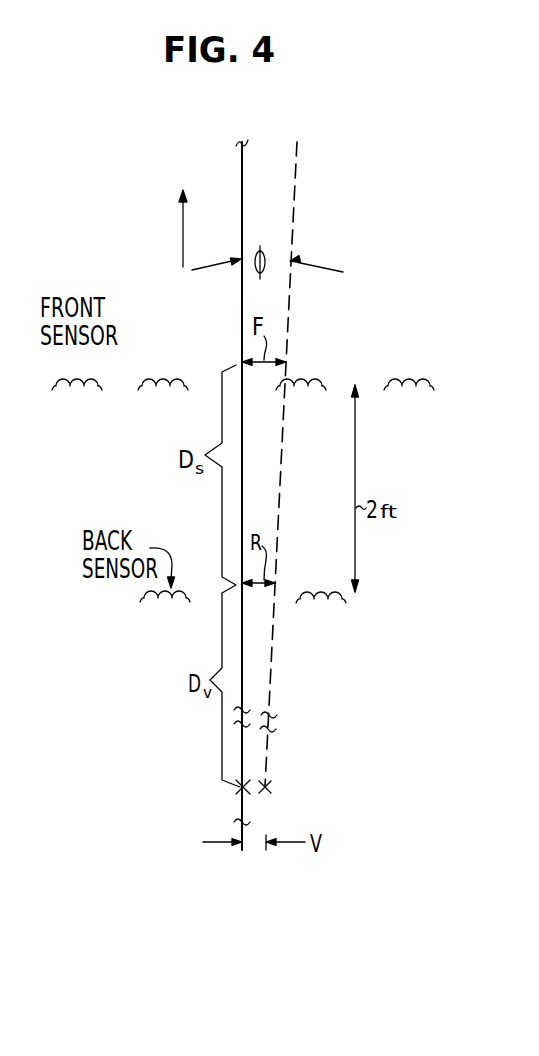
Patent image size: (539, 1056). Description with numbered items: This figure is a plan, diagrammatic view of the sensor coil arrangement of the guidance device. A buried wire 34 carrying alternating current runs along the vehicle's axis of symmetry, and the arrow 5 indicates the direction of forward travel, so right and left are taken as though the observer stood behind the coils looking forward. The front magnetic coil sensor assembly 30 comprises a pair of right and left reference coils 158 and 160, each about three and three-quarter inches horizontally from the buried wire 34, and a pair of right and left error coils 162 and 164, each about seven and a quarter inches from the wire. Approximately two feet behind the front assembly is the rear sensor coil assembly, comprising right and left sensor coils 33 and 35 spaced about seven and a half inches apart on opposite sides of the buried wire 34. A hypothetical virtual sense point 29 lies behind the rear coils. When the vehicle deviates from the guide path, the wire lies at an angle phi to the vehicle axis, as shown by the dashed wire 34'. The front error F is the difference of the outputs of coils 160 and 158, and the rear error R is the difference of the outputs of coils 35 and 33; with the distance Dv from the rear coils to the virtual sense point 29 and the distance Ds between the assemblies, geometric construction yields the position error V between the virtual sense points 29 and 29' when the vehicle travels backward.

The buried wire 34 is at (256, 495).
The wire at angle phi 34' is at (300, 464).
The forward travel arrow 5 is at (184, 237).
The front magnetic coil sensor assembly 30 is at (324, 312).
The left error coil 164 is at (56, 377).
The left reference coil 160 is at (140, 378).
The right reference coil 158 is at (321, 379).
The right error coil 162 is at (393, 379).
The left rear sensor coil 35 is at (142, 598).
The right rear sensor coil 33 is at (344, 600).
The virtual sense point 29 is at (211, 792).
The deviated virtual sense point 29' is at (291, 792).